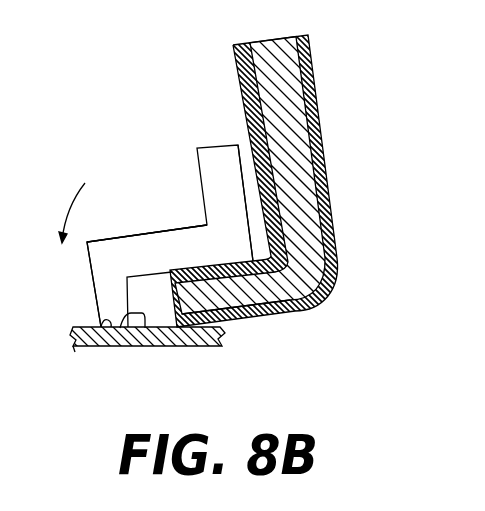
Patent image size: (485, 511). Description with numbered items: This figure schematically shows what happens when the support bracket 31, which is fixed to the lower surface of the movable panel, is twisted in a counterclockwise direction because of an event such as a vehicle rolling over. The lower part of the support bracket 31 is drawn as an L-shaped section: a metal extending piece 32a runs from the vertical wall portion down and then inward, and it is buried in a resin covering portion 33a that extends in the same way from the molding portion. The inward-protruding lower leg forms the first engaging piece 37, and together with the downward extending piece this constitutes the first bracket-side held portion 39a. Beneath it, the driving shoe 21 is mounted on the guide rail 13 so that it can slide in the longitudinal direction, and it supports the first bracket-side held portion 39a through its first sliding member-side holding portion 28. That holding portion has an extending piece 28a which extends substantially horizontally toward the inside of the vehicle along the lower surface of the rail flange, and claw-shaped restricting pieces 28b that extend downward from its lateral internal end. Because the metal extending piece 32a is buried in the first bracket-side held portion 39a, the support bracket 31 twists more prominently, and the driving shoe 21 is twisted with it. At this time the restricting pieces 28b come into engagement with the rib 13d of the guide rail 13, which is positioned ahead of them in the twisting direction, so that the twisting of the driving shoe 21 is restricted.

The support bracket 31 is at (318, 64).
The extending piece 32a is at (302, 192).
The covering portion 33a is at (325, 283).
The first engaging piece 37 is at (288, 311).
The driving shoe 21 is at (197, 148).
The first bracket-side held portion 39a is at (252, 156).
The first sliding member-side holding portion 28 is at (128, 238).
The extending piece 28a is at (170, 229).
The restricting pieces 28b is at (102, 320).
The guide rail 13 is at (180, 347).
The rib 13d is at (117, 330).